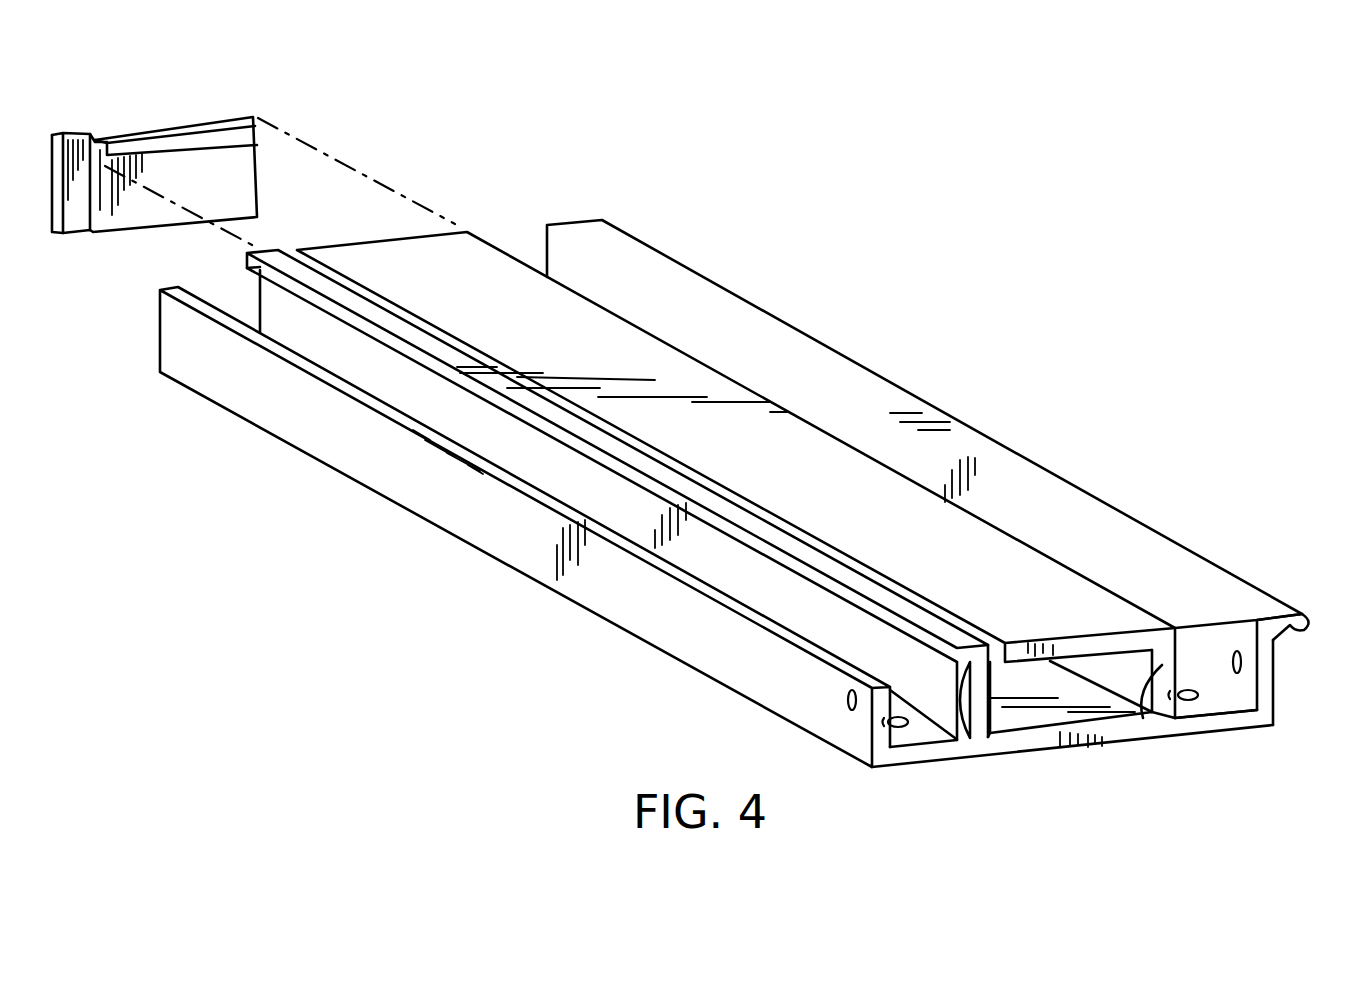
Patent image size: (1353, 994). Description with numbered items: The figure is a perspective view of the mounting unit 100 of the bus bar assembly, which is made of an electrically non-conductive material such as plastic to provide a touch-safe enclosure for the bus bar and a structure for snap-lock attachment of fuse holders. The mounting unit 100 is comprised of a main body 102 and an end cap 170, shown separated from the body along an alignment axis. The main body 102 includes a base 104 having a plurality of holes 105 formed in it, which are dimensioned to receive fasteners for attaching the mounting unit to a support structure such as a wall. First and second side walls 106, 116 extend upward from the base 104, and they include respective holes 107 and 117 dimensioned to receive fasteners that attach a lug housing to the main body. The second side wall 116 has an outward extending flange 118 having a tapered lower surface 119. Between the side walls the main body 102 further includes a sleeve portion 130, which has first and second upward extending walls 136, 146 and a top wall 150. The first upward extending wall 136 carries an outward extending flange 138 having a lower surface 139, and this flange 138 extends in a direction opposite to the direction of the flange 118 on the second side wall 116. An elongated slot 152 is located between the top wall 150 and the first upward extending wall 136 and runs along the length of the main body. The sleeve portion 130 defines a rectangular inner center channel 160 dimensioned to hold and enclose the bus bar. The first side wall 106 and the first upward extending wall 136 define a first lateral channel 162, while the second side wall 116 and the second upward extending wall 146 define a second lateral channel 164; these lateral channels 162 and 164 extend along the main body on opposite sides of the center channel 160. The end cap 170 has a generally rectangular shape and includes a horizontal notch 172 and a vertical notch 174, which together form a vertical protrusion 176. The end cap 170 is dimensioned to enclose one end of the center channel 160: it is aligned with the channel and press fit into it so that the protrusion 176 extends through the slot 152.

The mounting unit 100 is at (773, 182).
The main body 102 is at (815, 334).
The base 104 is at (1100, 740).
The holes 105 is at (898, 727).
The first side wall 106 is at (615, 598).
The hole 107 is at (848, 701).
The second side wall 116 is at (1266, 678).
The hole 117 is at (1237, 652).
The outward extending flange 118 is at (1290, 620).
The tapered lower surface 119 is at (1310, 628).
The sleeve portion 130 is at (973, 551).
The first upward extending wall 136 is at (982, 704).
The outward extending flange 138 is at (813, 577).
The lower surface 139 is at (960, 743).
The second upward extending wall 146 is at (1143, 706).
The top wall 150 is at (1085, 640).
The elongated slot 152 is at (810, 538).
The inner center channel 160 is at (1047, 712).
The first lateral channel 162 is at (925, 697).
The second lateral channel 164 is at (1198, 643).
The end cap 170 is at (193, 115).
The horizontal notch 172 is at (228, 128).
The vertical notch 174 is at (70, 207).
The vertical protrusion 176 is at (95, 140).